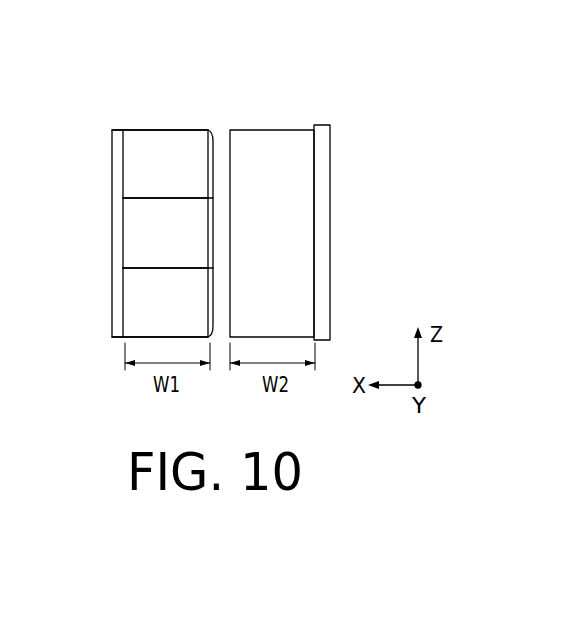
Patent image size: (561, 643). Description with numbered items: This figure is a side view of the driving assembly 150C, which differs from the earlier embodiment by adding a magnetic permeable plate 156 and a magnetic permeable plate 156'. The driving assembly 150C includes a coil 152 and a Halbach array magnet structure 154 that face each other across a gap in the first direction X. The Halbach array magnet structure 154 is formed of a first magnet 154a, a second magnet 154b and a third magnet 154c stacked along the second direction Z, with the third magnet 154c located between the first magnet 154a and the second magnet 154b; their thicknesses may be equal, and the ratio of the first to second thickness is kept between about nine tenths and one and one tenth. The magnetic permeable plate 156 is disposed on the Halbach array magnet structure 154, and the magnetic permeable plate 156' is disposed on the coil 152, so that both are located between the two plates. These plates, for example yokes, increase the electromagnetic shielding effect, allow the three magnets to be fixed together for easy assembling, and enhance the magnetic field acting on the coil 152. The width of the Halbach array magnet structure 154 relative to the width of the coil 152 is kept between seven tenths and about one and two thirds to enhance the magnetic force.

The driving assembly 150C is at (223, 203).
The coil 152 is at (307, 199).
The Halbach array magnet structure 154 is at (129, 198).
The first magnet 154a is at (138, 158).
The second magnet 154b is at (138, 298).
The third magnet 154c is at (138, 228).
The magnetic permeable plate 156 is at (84, 217).
The magnetic permeable plate 156' is at (358, 232).